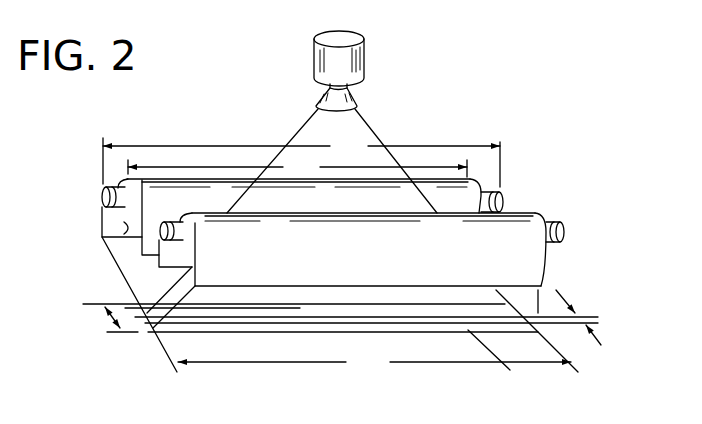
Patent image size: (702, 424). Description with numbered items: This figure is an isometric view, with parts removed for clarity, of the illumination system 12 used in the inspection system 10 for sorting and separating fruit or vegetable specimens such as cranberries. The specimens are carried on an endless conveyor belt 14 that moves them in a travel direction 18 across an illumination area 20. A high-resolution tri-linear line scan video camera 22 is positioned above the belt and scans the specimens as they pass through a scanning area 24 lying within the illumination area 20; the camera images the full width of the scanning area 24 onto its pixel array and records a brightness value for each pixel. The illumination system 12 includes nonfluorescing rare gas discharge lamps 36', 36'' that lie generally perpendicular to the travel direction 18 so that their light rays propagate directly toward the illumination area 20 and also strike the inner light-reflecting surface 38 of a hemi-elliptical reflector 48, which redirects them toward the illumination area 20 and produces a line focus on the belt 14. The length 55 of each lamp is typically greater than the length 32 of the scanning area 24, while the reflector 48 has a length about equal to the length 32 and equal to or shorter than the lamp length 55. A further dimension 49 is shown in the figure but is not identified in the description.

The inspection system 10 is at (223, 125).
The illumination system 12 is at (190, 177).
The endless conveyor belt 14 is at (222, 323).
The conveyor belt travel direction 18 is at (510, 370).
The illumination area 20 is at (107, 308).
The tri-linear line scan video camera 22 is at (372, 50).
The scanning area 24 is at (148, 313).
The length of scanning area 32 is at (374, 364).
The nonfluorescing rare gas discharge lamp 36' is at (574, 201).
The nonfluorescing rare gas discharge lamp 36'' is at (81, 209).
The inner light-reflecting surface 38 is at (127, 227).
The hemi-elliptical reflector 48 is at (527, 213).
The roller body length 49 is at (297, 167).
The length of lamp 55 is at (301, 160).